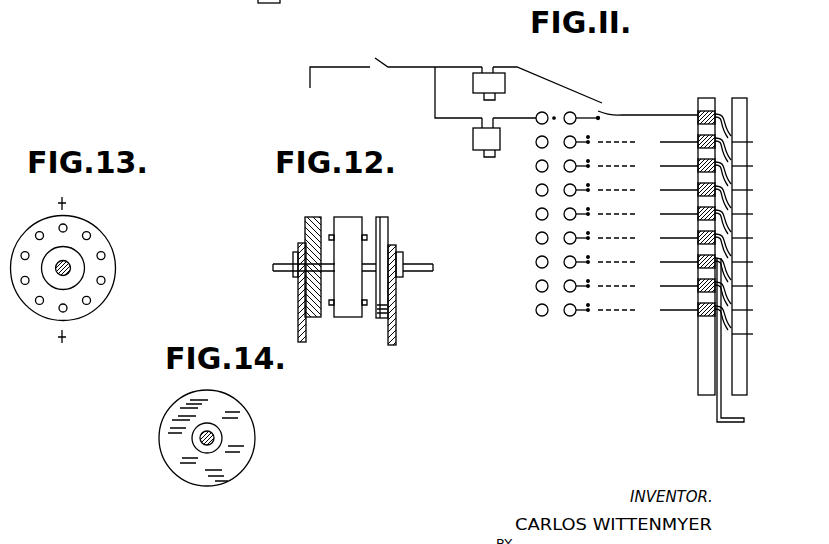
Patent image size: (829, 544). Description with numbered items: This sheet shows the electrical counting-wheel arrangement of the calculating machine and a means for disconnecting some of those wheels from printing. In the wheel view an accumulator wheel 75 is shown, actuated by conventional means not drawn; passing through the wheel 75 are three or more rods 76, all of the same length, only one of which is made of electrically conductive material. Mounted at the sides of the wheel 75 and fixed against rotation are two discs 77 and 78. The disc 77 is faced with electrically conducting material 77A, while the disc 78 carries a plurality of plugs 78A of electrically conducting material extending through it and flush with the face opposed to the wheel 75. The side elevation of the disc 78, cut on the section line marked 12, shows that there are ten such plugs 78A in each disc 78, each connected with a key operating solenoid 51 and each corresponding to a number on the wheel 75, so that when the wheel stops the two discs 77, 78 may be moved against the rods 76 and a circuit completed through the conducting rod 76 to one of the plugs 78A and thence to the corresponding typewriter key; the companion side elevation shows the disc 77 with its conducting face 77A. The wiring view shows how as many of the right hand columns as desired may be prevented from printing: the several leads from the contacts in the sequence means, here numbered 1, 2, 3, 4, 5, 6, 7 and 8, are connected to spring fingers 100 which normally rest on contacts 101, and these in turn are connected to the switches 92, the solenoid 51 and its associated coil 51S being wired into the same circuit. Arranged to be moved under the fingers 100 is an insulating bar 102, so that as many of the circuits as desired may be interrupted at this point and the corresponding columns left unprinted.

In FIG. 11, the switch coil 51S is at (489, 83).
In FIG. 11, the key operating solenoid 51 is at (486, 137).
In FIG. 11, the switch 92 is at (603, 102).
In FIG. 11, the spring finger 100 is at (732, 108).
In FIG. 11, the contact 101 is at (698, 290).
In FIG. 11, the insulating bar 102 is at (715, 419).
In FIG. 11, the contact 1 is at (670, 238).
In FIG. 11, the contact 2 is at (670, 298).
In FIG. 11, the contact 3 is at (670, 274).
In FIG. 11, the contact 4 is at (670, 248).
In FIG. 11, the contact 5 is at (670, 224).
In FIG. 11, the contact 6 is at (670, 200).
In FIG. 11, the contact 7 is at (670, 176).
In FIG. 11, the contact 8 is at (670, 233).
In FIG. 12, the accumulator wheel 75 is at (355, 217).
In FIG. 12, the rod 76 is at (380, 217).
In FIG. 12, the disc 77 is at (392, 240).
In FIG. 14, the disc 77 is at (227, 483).
In FIG. 12, the electrically conducting material 77A is at (376, 318).
In FIG. 14, the electrically conducting material 77A is at (243, 463).
In FIG. 12, the disc 78 is at (305, 217).
In FIG. 13, the disc 78 is at (105, 236).
In FIG. 13, the plug 78A is at (105, 255).
In FIG. 13, the section line 12 is at (71, 271).